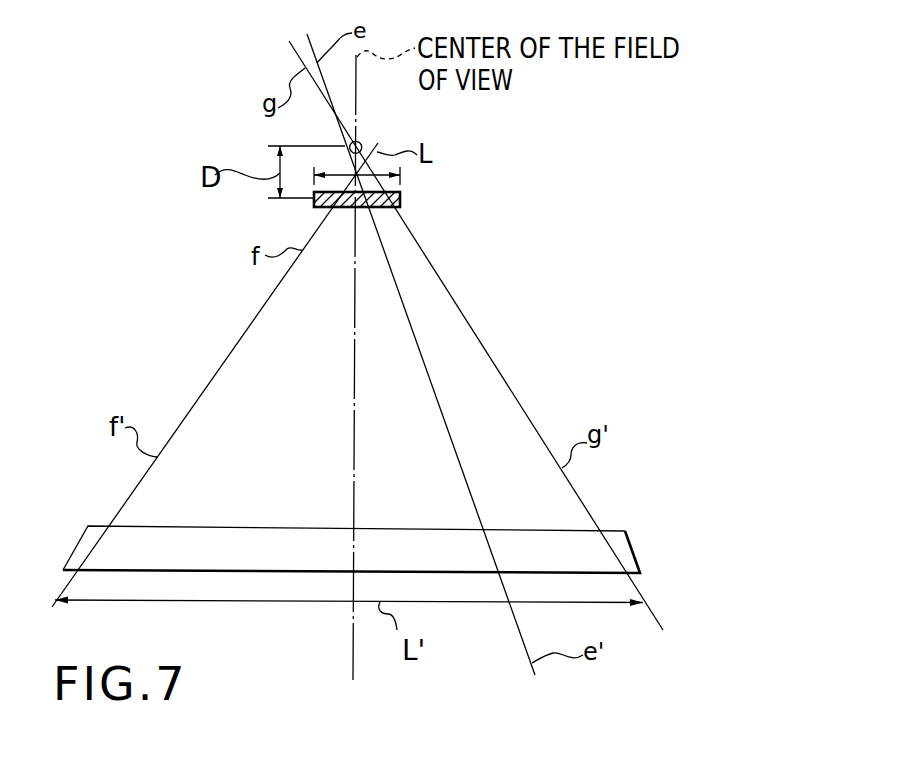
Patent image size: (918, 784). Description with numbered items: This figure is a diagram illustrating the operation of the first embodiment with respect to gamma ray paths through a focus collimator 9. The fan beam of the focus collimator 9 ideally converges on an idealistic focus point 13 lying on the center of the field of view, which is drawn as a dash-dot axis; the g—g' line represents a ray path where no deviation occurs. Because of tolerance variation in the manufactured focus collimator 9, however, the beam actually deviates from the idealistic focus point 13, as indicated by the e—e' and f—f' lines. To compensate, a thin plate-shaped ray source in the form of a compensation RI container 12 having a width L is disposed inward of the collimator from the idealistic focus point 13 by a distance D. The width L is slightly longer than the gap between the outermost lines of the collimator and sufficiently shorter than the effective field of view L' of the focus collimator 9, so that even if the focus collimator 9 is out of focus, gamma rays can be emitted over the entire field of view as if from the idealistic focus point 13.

The focus collimator 9 is at (637, 550).
The compensation RI container 12 is at (402, 203).
The idealistic focus point 13 is at (361, 140).